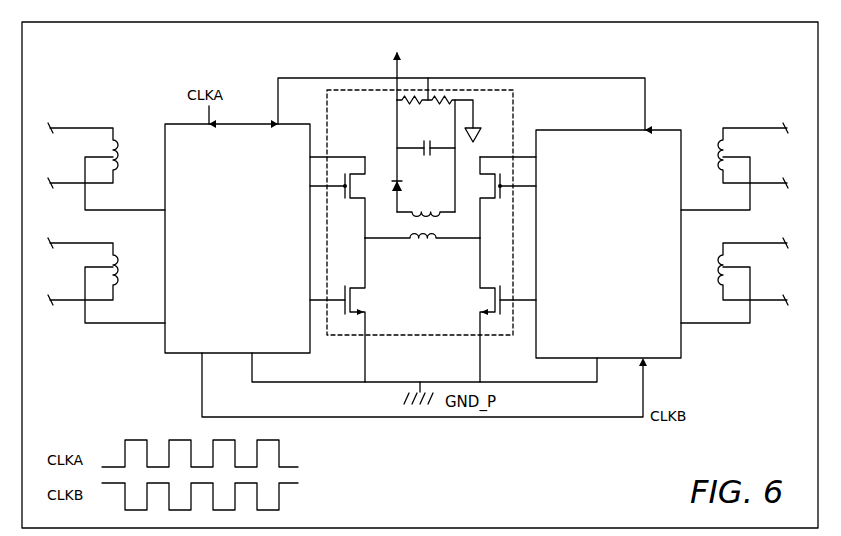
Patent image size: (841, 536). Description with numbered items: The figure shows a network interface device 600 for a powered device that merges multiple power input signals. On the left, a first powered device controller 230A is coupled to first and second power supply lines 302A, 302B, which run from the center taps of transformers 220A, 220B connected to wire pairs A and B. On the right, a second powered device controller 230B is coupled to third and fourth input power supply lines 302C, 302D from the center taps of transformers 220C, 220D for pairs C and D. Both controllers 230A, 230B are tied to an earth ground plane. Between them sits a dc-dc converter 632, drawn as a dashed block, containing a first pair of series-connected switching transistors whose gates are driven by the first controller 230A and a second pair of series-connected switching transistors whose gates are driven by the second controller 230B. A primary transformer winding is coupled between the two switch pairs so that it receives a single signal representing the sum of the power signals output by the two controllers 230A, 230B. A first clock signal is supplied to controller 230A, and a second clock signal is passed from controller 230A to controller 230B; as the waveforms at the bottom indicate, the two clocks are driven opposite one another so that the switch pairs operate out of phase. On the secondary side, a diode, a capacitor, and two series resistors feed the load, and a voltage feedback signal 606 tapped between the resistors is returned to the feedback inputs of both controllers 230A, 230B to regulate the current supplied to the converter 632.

The network interface device 600 is at (797, 54).
The voltage feedback signal 606 is at (484, 77).
The dc-dc converter 632 is at (360, 108).
The transformer 220A is at (117, 162).
The transformer 220B is at (117, 275).
The transformer 220C is at (718, 161).
The transformer 220D is at (718, 275).
The first power supply line 302A is at (150, 213).
The second power supply line 302B is at (147, 324).
The third input power supply line 302C is at (714, 211).
The fourth input power supply line 302D is at (714, 324).
The first powered device controller 230A is at (302, 345).
The second powered device controller 230B is at (584, 349).